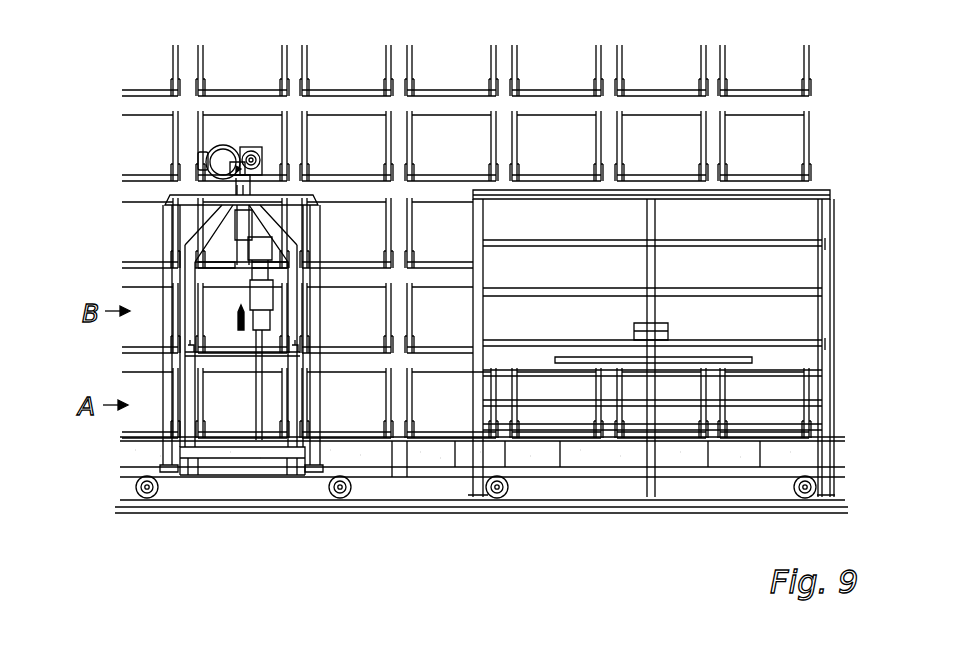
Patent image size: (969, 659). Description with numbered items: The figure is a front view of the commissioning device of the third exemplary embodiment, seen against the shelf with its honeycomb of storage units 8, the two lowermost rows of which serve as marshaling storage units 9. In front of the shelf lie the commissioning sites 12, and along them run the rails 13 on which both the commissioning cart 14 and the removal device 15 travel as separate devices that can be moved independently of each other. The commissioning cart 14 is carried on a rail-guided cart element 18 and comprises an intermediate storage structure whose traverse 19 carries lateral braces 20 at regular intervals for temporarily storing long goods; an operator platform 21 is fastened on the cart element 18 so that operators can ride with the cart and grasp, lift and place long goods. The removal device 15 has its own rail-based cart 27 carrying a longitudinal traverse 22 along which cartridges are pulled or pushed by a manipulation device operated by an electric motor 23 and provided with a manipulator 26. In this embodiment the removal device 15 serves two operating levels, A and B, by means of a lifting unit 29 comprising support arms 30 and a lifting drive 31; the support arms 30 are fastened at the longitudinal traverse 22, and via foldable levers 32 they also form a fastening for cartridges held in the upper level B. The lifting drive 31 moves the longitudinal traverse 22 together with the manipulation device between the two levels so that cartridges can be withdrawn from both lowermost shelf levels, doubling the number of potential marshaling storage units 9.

The storage unit 8 is at (773, 70).
The marshaling storage unit 9 is at (345, 416).
The commissioning site 12 is at (370, 462).
The rail 13 is at (405, 478).
The commissioning cart 14 is at (650, 487).
The removal device 15 is at (218, 452).
The cart element 18 is at (525, 490).
The traverse 19 is at (655, 328).
The lateral brace 20 is at (710, 358).
The operator platform 21 is at (797, 318).
The longitudinal traverse 22 is at (242, 213).
The electric motor 23 is at (272, 332).
The manipulator 26 is at (233, 320).
The rail-based cart 27 is at (178, 490).
The lifting unit 29 is at (237, 187).
The support arm 30 is at (190, 282).
The lifting drive 31 is at (230, 155).
The foldable lever 32 is at (190, 354).